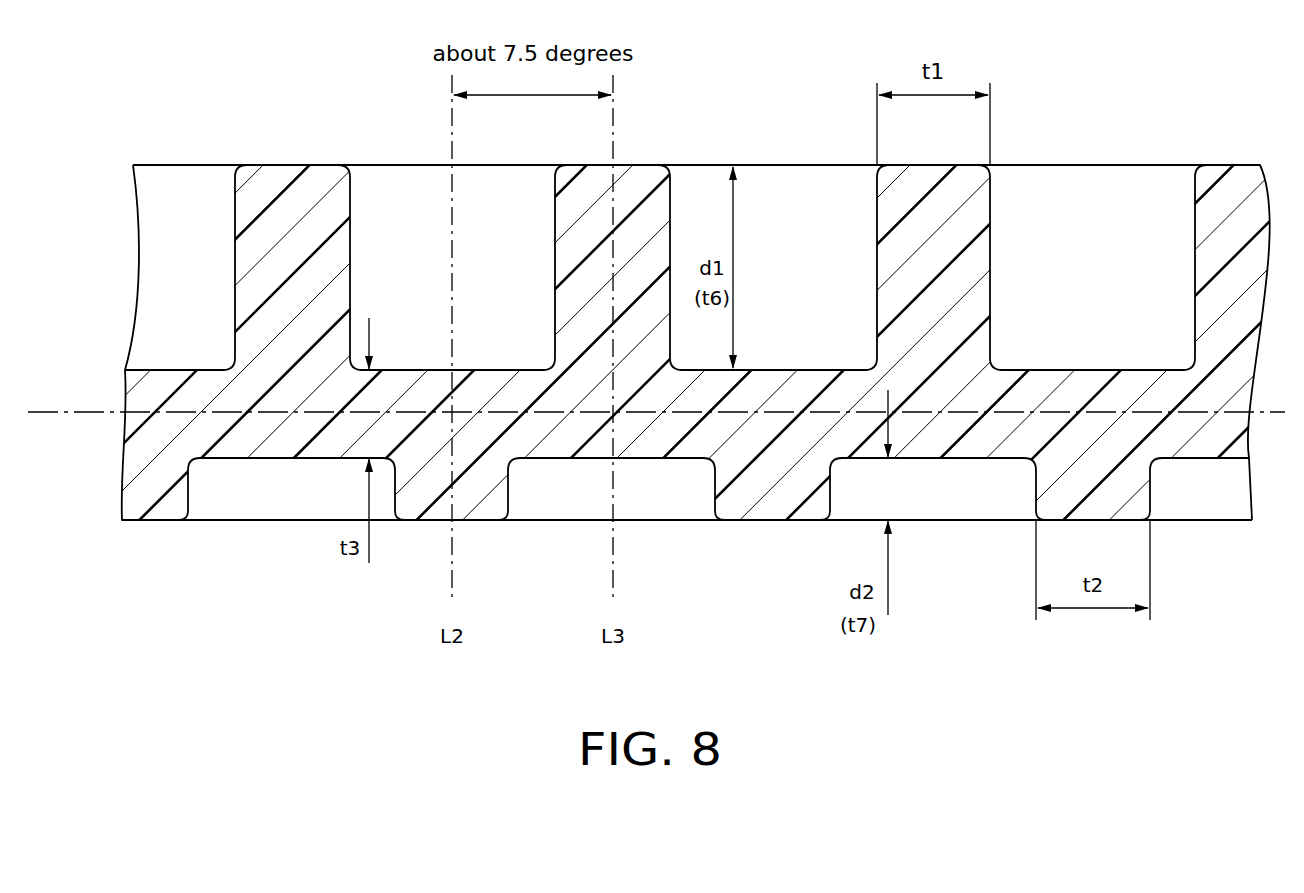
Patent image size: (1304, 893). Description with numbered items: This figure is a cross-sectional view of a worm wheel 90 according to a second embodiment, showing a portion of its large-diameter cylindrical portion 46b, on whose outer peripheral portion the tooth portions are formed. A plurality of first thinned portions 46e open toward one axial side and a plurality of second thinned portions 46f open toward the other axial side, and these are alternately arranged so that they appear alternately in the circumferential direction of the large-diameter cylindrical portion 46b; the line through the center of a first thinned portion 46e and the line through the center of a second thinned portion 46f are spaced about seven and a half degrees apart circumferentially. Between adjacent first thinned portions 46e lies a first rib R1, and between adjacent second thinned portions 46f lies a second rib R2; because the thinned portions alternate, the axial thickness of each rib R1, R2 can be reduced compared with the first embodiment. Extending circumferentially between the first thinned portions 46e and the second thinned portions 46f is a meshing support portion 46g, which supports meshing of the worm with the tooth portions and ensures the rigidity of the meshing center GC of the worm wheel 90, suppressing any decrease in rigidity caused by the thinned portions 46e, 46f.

The first thinned portions 46e is at (163, 281).
The second thinned portions 46f is at (238, 503).
The meshing support portion 46g is at (388, 427).
The large-diameter cylindrical portion 46b is at (642, 162).
The worm wheel 90 is at (331, 133).
The first rib R1 is at (274, 261).
The second rib R2 is at (139, 498).
The meshing center GC is at (70, 412).